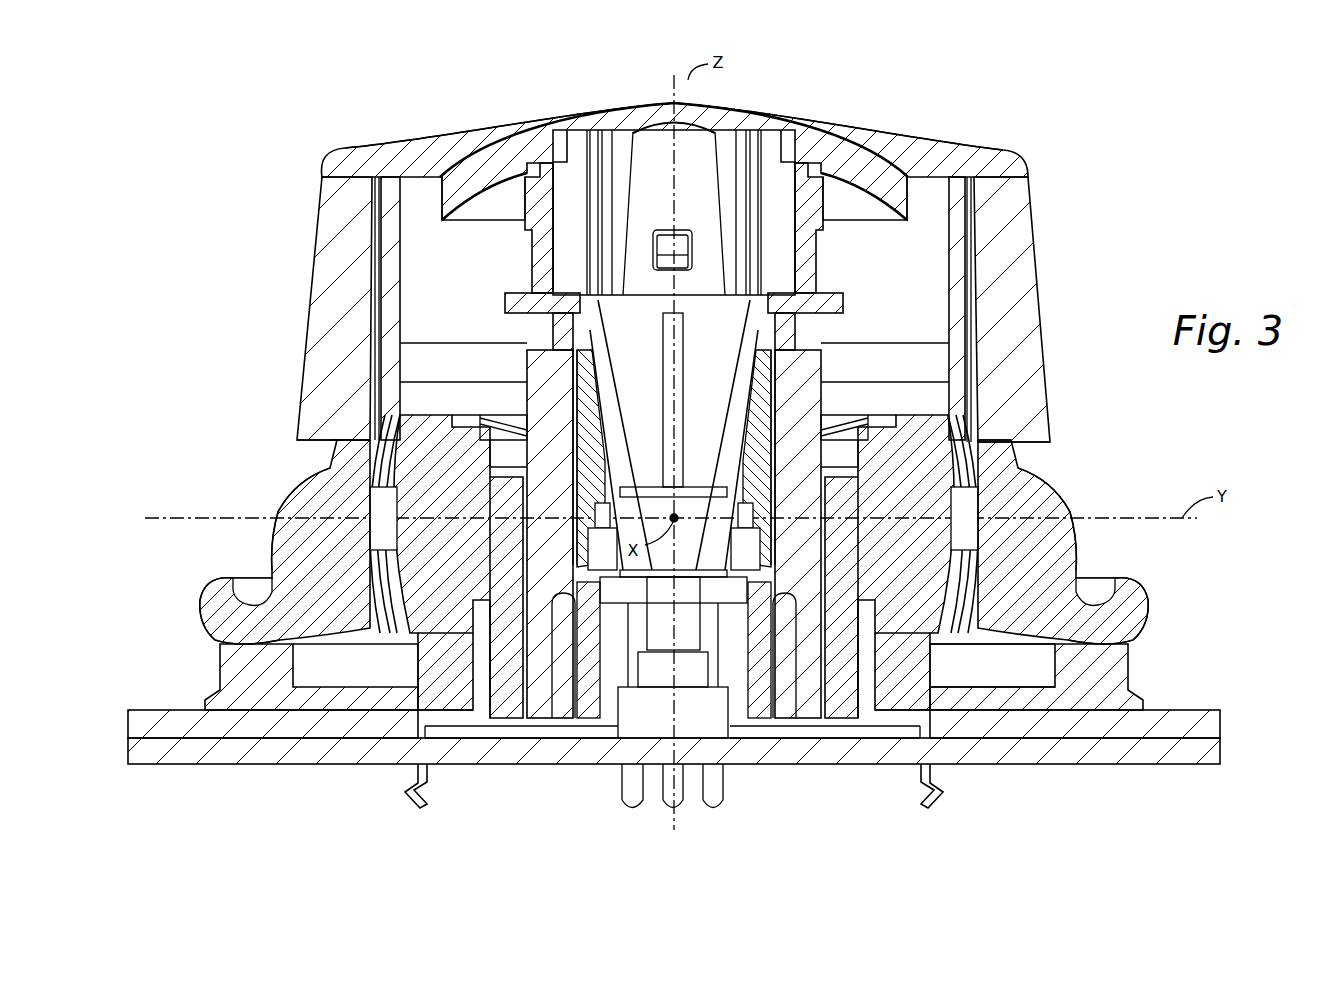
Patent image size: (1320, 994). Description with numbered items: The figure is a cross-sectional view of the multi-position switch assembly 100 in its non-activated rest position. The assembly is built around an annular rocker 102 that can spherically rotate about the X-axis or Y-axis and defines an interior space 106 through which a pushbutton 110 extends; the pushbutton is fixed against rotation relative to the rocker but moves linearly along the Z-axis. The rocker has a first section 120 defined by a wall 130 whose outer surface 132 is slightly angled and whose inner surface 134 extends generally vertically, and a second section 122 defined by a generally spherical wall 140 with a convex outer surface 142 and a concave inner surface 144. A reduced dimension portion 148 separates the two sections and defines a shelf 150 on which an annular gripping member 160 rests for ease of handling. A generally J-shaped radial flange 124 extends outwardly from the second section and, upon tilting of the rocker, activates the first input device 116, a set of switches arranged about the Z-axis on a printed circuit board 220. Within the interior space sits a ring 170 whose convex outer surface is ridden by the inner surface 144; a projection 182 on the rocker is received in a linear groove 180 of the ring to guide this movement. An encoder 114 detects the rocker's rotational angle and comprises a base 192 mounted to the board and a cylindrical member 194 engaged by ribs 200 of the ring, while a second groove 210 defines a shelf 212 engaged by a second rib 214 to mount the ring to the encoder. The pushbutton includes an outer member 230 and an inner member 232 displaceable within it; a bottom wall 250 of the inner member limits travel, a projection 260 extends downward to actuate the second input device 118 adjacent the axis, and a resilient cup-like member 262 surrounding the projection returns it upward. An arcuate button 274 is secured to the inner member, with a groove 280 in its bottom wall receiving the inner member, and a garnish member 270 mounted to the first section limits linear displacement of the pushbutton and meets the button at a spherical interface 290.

The multi-position switch assembly 100 is at (1122, 122).
The rocker 102 is at (1075, 505).
The interior space 106 is at (419, 205).
The pushbutton 110 is at (852, 280).
The encoder 114 is at (472, 700).
The first input device 116 is at (253, 663).
The second input device 118 is at (658, 677).
The first section 120 is at (965, 247).
The second section 122 is at (1015, 472).
The radial flange 124 is at (287, 567).
The wall 130 is at (387, 250).
The outer surface 132 is at (377, 228).
The inner surface 134 is at (400, 287).
The wall 140 is at (348, 472).
The outer surface 142 is at (337, 480).
The inner surface 144 is at (393, 387).
The reduced dimension portion 148 is at (980, 430).
The shelf 150 is at (353, 440).
The gripping member 160 is at (1020, 311).
The ring 170 is at (436, 600).
The linear groove 180 is at (965, 645).
The projection 182 is at (1000, 525).
The base 192 is at (892, 700).
The cylindrical member 194 is at (337, 445).
The ribs 200 is at (460, 560).
The second groove 210 is at (838, 625).
The shelf 212 is at (1003, 490).
The second rib 214 is at (935, 660).
The printed circuit board 220 is at (260, 757).
The outer member 230 is at (550, 378).
The inner member 232 is at (765, 392).
The bottom wall 250 is at (615, 540).
The projection 260 is at (692, 622).
The cup-like member 262 is at (746, 620).
The garnish member 270 is at (933, 140).
The button 274 is at (752, 118).
The groove 280 is at (547, 160).
The spherical interface 290 is at (468, 148).